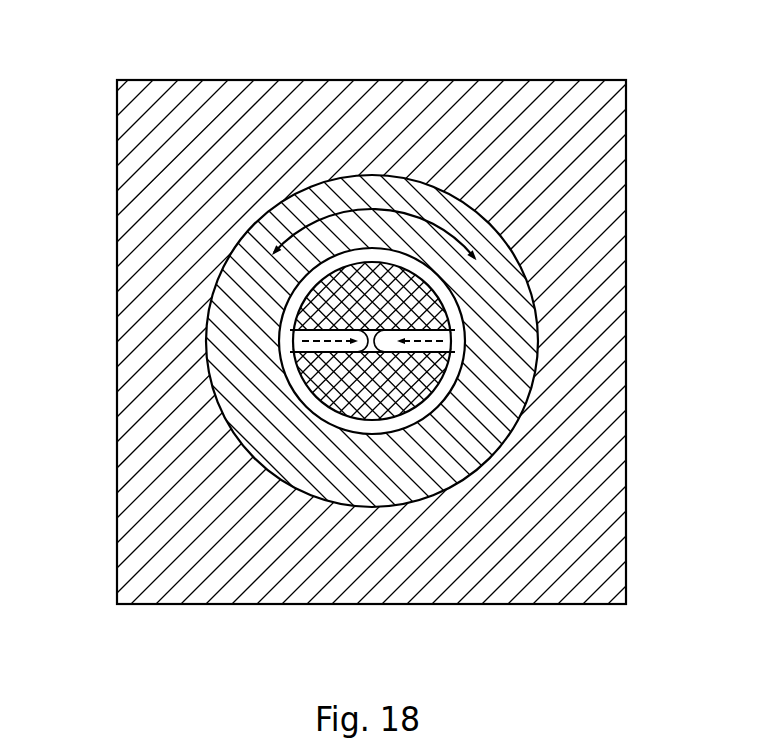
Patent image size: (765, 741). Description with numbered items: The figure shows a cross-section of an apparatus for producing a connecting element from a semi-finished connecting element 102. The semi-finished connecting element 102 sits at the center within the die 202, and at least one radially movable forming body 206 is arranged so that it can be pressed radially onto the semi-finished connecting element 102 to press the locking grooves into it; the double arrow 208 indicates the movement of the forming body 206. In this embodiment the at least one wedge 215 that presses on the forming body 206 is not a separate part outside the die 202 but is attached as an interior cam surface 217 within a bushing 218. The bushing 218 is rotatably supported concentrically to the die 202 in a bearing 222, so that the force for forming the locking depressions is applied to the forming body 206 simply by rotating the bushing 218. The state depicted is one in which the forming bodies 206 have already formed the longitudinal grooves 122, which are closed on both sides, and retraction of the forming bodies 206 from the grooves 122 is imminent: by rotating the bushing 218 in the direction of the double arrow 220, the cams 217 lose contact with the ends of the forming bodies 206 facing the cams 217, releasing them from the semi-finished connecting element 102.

The semi-finished connecting element 102 is at (375, 334).
The longitudinal grooves 122 is at (357, 333).
The die 202 is at (359, 400).
The radially movable forming body 206 is at (298, 352).
The double arrow 208 is at (422, 337).
The wedge 215 is at (456, 341).
The interior cam surface 217 is at (455, 314).
The bushing 218 is at (513, 392).
The double arrow 220 is at (348, 205).
The bearing 222 is at (607, 441).